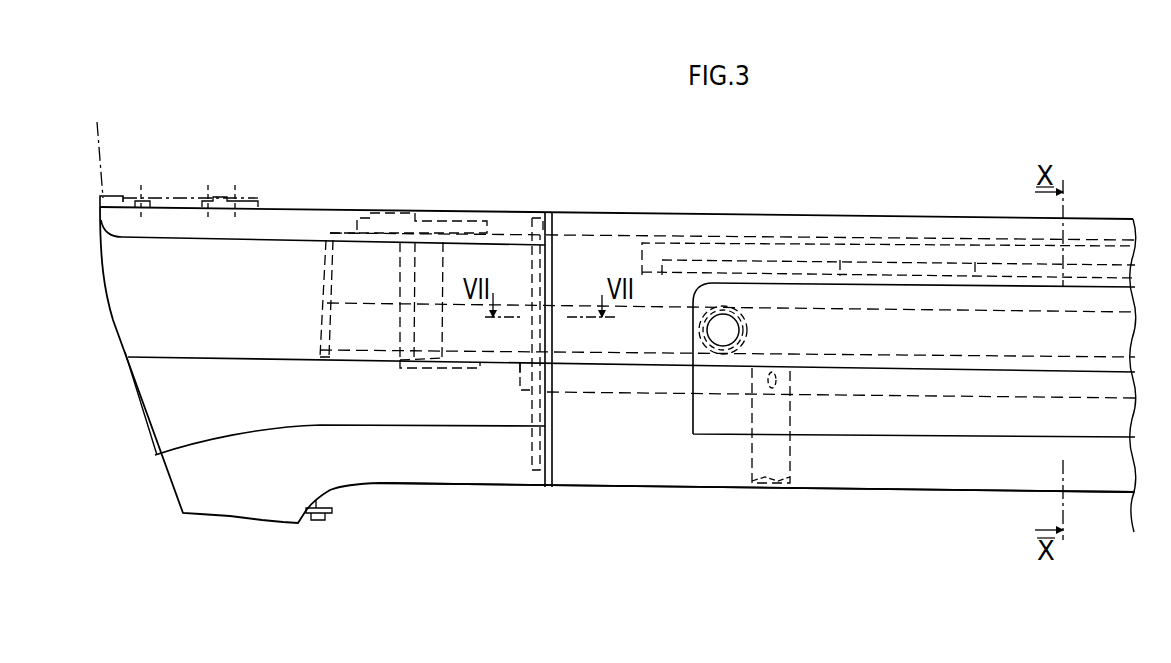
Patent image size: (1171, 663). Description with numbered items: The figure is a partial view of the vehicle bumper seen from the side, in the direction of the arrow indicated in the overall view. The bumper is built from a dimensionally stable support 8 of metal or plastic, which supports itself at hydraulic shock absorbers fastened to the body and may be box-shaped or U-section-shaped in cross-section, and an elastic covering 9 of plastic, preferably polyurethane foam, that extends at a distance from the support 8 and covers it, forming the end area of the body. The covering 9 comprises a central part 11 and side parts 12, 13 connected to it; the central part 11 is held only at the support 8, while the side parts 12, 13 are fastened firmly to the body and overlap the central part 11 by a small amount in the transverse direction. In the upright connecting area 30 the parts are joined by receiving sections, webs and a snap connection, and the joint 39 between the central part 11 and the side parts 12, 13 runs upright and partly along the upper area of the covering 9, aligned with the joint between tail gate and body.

The dimensionally stable support 8 is at (318, 306).
The elastic covering 9 is at (123, 372).
The central part 11 is at (803, 490).
The side part 12 is at (476, 477).
The side part 13 is at (757, 510).
The upright connecting area 30 is at (541, 401).
The joint 39 is at (547, 488).